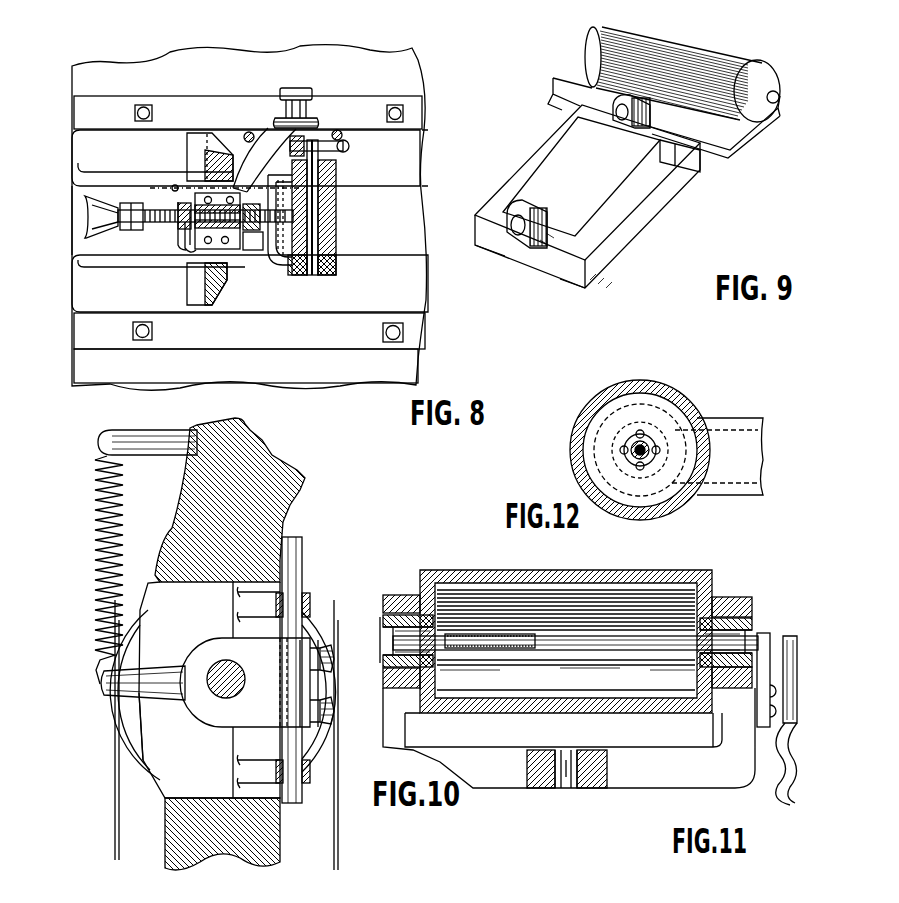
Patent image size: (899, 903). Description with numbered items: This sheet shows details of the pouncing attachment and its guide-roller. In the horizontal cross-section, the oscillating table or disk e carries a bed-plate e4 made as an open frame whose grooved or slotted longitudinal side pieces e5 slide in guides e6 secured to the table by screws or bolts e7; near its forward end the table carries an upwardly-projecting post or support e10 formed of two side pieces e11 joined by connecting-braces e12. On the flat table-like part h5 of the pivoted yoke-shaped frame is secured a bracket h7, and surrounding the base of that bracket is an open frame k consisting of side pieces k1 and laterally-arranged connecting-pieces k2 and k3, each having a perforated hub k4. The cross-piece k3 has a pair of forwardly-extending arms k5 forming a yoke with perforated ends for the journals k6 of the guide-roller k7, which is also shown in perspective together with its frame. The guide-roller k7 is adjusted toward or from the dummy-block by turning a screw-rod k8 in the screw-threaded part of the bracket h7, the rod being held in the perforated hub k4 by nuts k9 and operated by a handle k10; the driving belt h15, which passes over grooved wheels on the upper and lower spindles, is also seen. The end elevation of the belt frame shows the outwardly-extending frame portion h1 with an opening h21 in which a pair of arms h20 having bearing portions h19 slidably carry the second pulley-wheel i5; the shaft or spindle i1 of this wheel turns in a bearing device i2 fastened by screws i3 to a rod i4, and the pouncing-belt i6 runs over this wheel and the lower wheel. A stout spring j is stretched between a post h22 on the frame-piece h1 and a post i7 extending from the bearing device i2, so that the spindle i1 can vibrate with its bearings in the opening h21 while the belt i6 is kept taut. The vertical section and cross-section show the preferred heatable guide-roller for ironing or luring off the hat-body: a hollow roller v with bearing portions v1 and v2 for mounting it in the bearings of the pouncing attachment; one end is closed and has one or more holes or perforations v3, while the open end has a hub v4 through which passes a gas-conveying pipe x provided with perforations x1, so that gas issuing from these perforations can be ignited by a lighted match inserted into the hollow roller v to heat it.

In FIG. 8, the oscillating table or disk e is at (249, 218).
In FIG. 8, the bed-plate e4 is at (72, 240).
In FIG. 8, the longitudinal side pieces e5 is at (249, 254).
In FIG. 8, the guides e6 is at (428, 118).
In FIG. 8, the screws or bolts e7 is at (142, 110).
In FIG. 8, the post or support e10 is at (118, 145).
In FIG. 8, the side pieces e11 is at (128, 178).
In FIG. 8, the connecting-braces e12 is at (143, 203).
In FIG. 8, the frame portion h1 is at (272, 140).
In FIG. 10, the frame portion h1 is at (185, 486).
In FIG. 8, the flat table-like part h5 is at (171, 196).
In FIG. 8, the bracket h7 is at (232, 250).
In FIG. 8, the belt h15 is at (247, 133).
In FIG. 10, the bearing portions h19 is at (310, 605).
In FIG. 10, the arms h20 is at (241, 607).
In FIG. 10, the opening h21 is at (166, 734).
In FIG. 8, the post h22 is at (312, 138).
In FIG. 10, the post h22 is at (148, 432).
In FIG. 8, the shaft or spindle i1 is at (296, 93).
In FIG. 10, the shaft or spindle i1 is at (228, 676).
In FIG. 10, the bearing device i2 is at (245, 682).
In FIG. 10, the screws i3 is at (343, 672).
In FIG. 10, the rod i4 is at (300, 560).
In FIG. 10, the second pulley-wheel i5 is at (130, 717).
In FIG. 10, the pouncing-belt i6 is at (114, 768).
In FIG. 10, the post i7 is at (163, 673).
In FIG. 10, the spring j is at (93, 560).
In FIG. 8, the open frame k is at (167, 184).
In FIG. 8, the side pieces k1 is at (192, 188).
In FIG. 9, the side pieces k1 is at (512, 181).
In FIG. 8, the connecting-piece k2 is at (190, 235).
In FIG. 9, the connecting-piece k2 is at (559, 243).
In FIG. 8, the cross-piece k3 is at (268, 203).
In FIG. 9, the cross-piece k3 is at (674, 145).
In FIG. 8, the perforated hub k4 is at (192, 248).
In FIG. 9, the perforated hub k4 is at (541, 214).
In FIG. 8, the arms k5 is at (335, 158).
In FIG. 9, the arms k5 is at (556, 80).
In FIG. 8, the journals k6 is at (338, 275).
In FIG. 9, the journals k6 is at (777, 106).
In FIG. 8, the guide-roller k7 is at (338, 222).
In FIG. 9, the guide-roller k7 is at (728, 62).
In FIG. 8, the screw-rod k8 is at (170, 222).
In FIG. 8, the nuts k9 is at (182, 230).
In FIG. 8, the handle k10 is at (88, 214).
In FIG. 12, the hollow roller v is at (575, 420).
In FIG. 11, the hollow roller v is at (482, 563).
In FIG. 11, the bearing portion v1 is at (384, 604).
In FIG. 11, the bearing portion v2 is at (752, 612).
In FIG. 12, the holes or perforations v3 is at (636, 436).
In FIG. 11, the holes or perforations v3 is at (385, 633).
In FIG. 11, the hub v4 is at (760, 637).
In FIG. 12, the gas-conveying pipe x is at (635, 458).
In FIG. 11, the gas-conveying pipe x is at (578, 648).
In FIG. 12, the perforations x1 is at (648, 455).
In FIG. 11, the perforations x1 is at (488, 638).